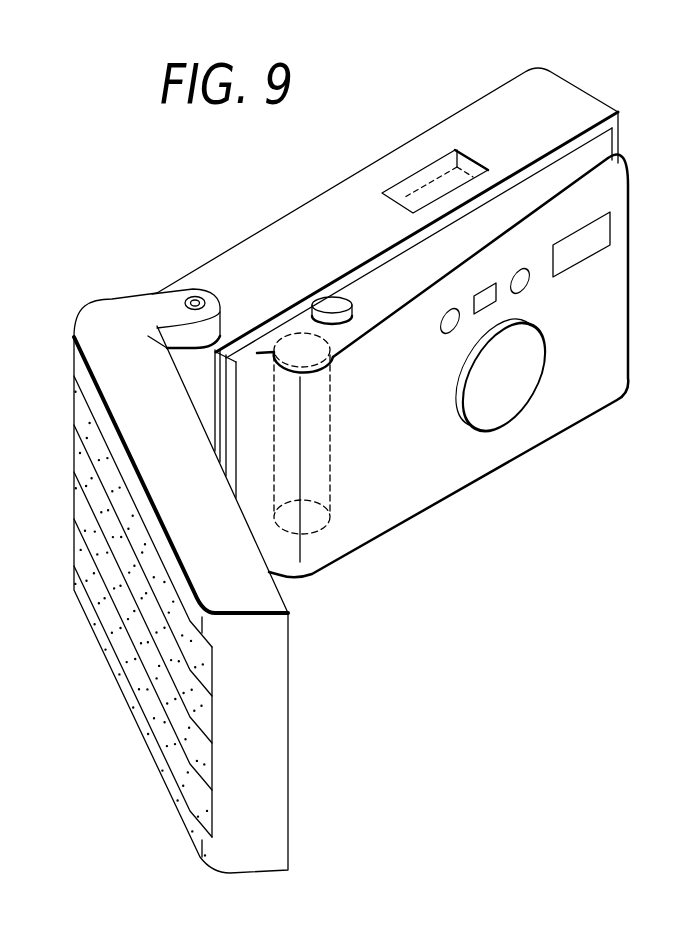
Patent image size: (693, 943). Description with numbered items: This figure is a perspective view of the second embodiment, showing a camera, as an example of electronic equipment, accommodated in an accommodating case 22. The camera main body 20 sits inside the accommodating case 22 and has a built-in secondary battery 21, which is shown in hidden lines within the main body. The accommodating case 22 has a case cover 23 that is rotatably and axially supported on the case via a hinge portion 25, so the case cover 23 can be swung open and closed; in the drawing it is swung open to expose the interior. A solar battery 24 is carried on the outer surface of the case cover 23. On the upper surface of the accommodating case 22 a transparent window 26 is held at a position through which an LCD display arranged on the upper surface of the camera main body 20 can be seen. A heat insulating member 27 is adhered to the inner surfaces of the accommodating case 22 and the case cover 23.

The camera main body 20 is at (617, 293).
The secondary battery 21 is at (330, 488).
The accommodating case 22 is at (308, 213).
The case cover 23 is at (273, 707).
The solar battery 24 is at (184, 778).
The hinge portion 25 is at (195, 296).
The transparent window 26 is at (422, 177).
The heat insulating member 27 is at (612, 147).